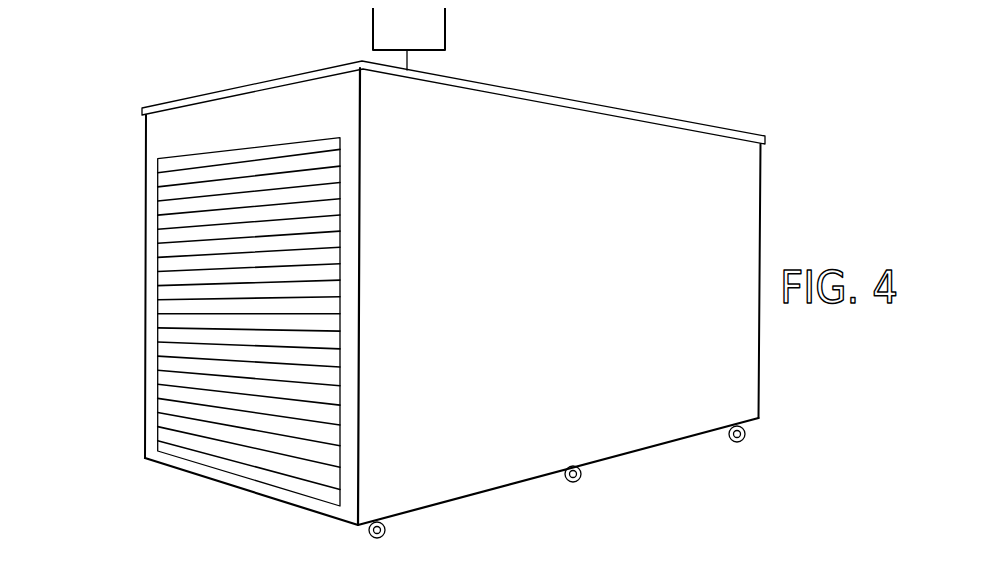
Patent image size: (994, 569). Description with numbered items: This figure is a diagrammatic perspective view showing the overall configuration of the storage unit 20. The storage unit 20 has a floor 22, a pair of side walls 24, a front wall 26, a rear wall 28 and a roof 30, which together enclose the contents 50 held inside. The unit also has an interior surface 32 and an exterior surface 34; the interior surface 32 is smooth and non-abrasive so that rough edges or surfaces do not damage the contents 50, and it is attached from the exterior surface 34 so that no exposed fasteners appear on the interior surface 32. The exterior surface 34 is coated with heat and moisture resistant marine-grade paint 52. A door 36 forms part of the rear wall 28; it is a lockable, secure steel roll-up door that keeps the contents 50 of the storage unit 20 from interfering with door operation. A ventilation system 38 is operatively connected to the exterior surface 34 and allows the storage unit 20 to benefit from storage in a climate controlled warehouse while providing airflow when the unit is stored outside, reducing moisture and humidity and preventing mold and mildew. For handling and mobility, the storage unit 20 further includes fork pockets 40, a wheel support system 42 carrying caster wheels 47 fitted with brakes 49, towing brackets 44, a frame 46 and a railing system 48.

The storage unit 20 is at (84, 210).
The floor 22 is at (457, 507).
The side walls 24 is at (146, 134).
The front wall 26 is at (772, 205).
The rear wall 28 is at (243, 108).
The roof 30 is at (724, 128).
The interior surface 32 is at (727, 328).
The exterior surface 34 is at (599, 407).
The door 36 is at (176, 327).
The ventilation system 38 is at (425, 42).
The fork pockets 40 is at (774, 405).
The wheel support system 42 is at (380, 503).
The towing brackets 44 is at (241, 499).
The frame 46 is at (373, 84).
The caster wheels 47 is at (385, 538).
The railing system 48 is at (482, 178).
The brakes 49 is at (400, 518).
The contents 50 is at (583, 145).
The marine-grade paint 52 is at (518, 465).